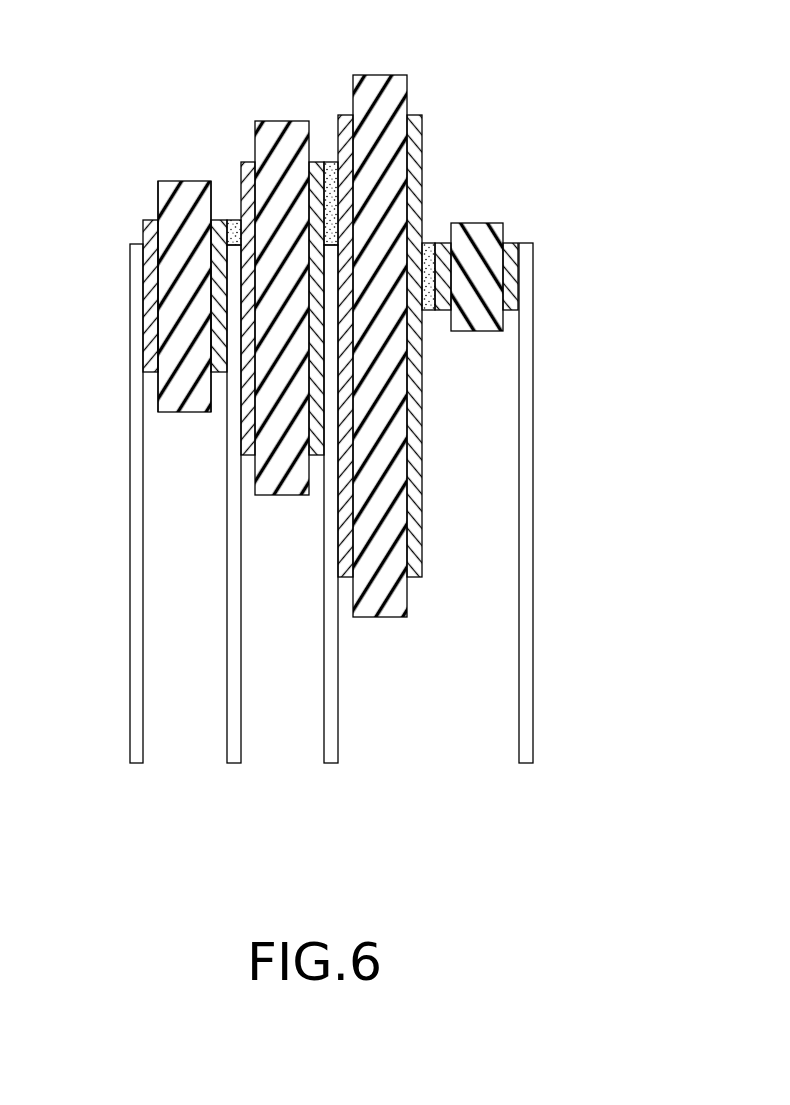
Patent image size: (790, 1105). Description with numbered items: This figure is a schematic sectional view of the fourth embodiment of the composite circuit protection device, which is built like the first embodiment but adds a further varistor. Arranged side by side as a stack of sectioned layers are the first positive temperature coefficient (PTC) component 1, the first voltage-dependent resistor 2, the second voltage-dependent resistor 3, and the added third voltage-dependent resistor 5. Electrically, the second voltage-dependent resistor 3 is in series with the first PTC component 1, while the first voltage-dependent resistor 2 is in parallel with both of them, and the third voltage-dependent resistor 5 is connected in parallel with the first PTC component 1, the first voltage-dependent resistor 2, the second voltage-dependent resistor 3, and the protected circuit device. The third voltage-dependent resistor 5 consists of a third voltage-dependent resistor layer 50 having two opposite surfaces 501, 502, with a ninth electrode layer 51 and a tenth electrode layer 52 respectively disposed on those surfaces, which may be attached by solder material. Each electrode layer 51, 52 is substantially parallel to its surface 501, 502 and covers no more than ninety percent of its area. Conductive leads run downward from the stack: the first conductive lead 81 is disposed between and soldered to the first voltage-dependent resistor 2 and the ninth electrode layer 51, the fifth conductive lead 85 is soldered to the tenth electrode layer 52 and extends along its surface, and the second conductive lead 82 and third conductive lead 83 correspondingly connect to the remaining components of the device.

The first positive temperature coefficient (PTC) component 1 is at (508, 220).
The first voltage-dependent resistor 2 is at (245, 118).
The second voltage-dependent resistor 3 is at (418, 70).
The third voltage-dependent resistor 5 is at (145, 287).
The third voltage-dependent resistor layer 50 is at (183, 292).
The ninth electrode layer 51 is at (226, 228).
The tenth electrode layer 52 is at (150, 238).
The surface of the third voltage-dependent resistor layer 501 is at (212, 342).
The surface of the third voltage-dependent resistor layer 502 is at (158, 332).
The first conductive lead 81 is at (233, 755).
The second conductive lead 82 is at (330, 755).
The third conductive lead 83 is at (526, 755).
The fifth conductive lead 85 is at (136, 755).